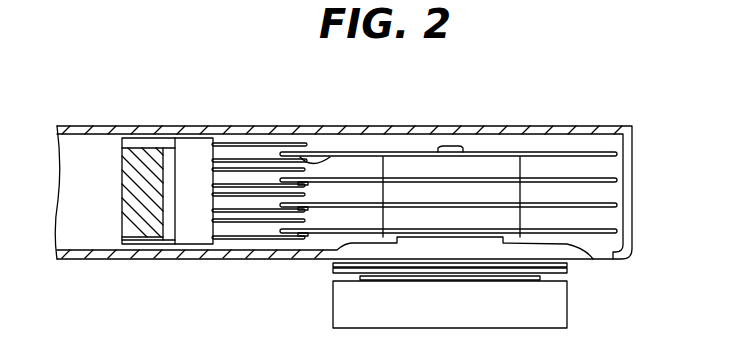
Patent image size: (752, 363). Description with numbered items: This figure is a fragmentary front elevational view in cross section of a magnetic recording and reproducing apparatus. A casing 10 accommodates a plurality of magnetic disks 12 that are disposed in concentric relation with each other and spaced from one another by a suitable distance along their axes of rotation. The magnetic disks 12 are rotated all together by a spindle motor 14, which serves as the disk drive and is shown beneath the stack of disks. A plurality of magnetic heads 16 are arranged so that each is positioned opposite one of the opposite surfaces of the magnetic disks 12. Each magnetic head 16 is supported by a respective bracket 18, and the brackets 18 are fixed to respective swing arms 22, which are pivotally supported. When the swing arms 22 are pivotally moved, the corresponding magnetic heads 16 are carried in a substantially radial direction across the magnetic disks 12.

The casing 10 is at (270, 259).
The magnetic disks 12 is at (543, 152).
The spindle motor 14 is at (348, 310).
The magnetic heads 16 is at (308, 144).
The brackets 18 is at (226, 152).
The swing arms 22 is at (130, 176).